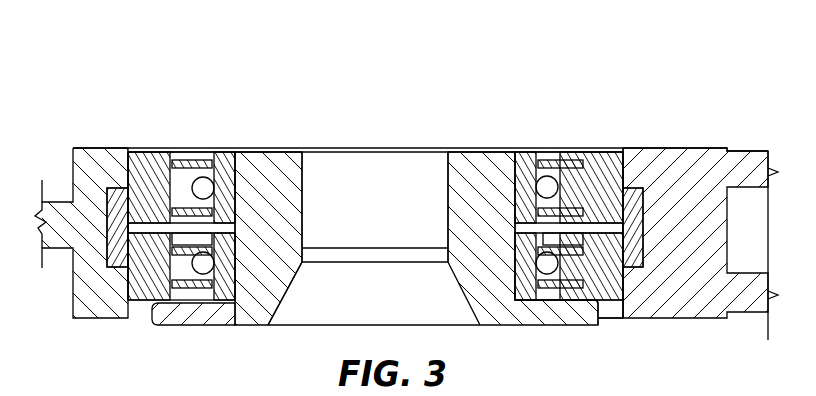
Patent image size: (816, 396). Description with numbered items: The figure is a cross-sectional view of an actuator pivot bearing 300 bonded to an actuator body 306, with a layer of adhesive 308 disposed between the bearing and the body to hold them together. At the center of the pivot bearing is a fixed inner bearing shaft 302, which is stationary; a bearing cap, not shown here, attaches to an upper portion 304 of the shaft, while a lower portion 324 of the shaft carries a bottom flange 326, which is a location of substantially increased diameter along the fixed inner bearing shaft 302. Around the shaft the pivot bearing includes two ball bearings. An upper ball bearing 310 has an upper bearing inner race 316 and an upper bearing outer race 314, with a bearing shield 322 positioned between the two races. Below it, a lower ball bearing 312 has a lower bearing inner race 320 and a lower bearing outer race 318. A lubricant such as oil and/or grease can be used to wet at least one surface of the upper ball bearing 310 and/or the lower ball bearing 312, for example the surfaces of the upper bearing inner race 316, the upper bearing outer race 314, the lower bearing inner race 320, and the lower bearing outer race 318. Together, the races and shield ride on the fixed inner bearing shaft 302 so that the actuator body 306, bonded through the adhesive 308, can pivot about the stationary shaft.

The actuator pivot bearing 300 is at (220, 76).
The fixed inner bearing shaft 302 is at (425, 165).
The upper portion 304 is at (267, 163).
The actuator body 306 is at (713, 152).
The layer of adhesive 308 is at (636, 188).
The upper ball bearing 310 is at (548, 165).
The lower ball bearing 312 is at (553, 293).
The upper bearing outer race 314 is at (626, 185).
The upper bearing inner race 316 is at (527, 163).
The lower bearing outer race 318 is at (620, 305).
The lower bearing inner race 320 is at (550, 285).
The bearing shield 322 is at (180, 157).
The lower portion 324 is at (282, 268).
The bottom flange 326 is at (168, 313).